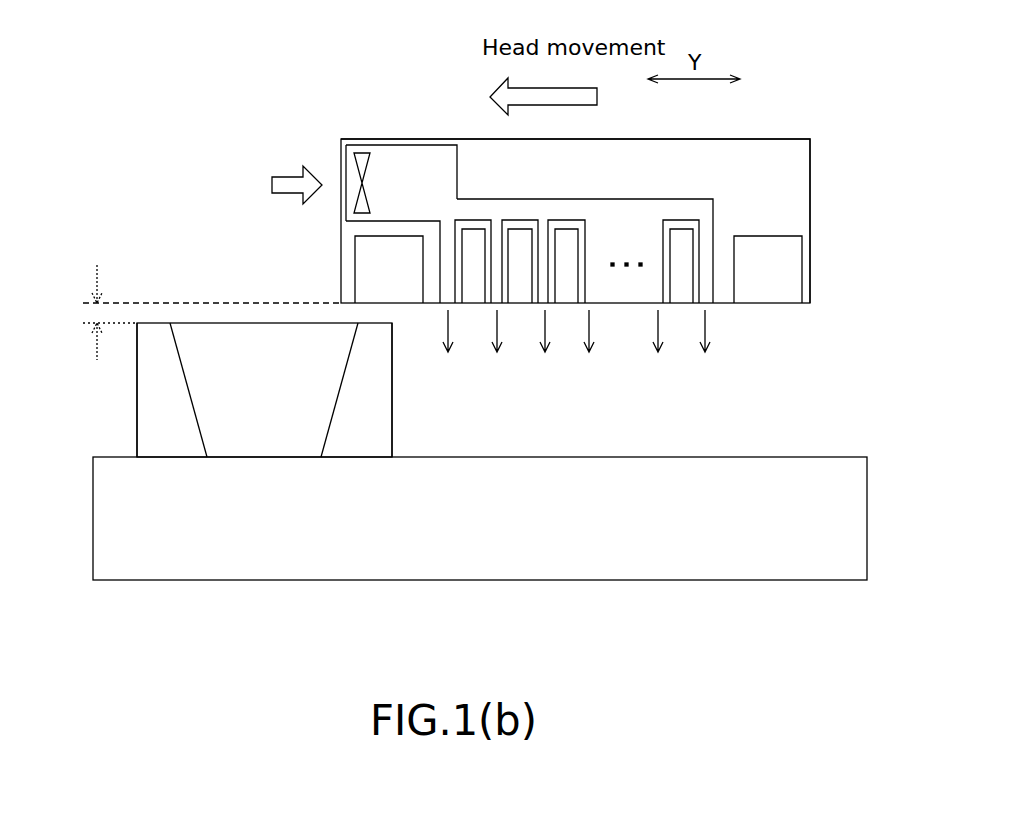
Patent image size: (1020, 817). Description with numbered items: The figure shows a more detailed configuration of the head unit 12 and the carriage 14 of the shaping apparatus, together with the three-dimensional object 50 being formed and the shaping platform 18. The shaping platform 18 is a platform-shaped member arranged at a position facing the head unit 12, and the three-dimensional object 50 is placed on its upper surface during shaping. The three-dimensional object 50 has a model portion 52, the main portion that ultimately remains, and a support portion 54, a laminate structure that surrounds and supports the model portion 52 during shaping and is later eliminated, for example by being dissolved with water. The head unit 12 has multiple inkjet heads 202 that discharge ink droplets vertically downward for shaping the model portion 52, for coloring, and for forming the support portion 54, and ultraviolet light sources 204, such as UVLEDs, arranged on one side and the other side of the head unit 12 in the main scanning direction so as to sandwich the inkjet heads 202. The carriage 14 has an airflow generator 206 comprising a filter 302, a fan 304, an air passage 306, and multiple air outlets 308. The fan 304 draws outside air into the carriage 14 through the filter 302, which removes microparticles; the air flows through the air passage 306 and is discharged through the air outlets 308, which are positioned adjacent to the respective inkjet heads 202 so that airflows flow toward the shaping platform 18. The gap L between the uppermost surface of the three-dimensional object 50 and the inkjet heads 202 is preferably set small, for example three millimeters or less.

The head unit 12 is at (814, 285).
The carriage 14 is at (798, 162).
The shaping platform 18 is at (522, 565).
The three-dimensional object 50 is at (127, 403).
The model portion 52 is at (256, 447).
The support portion 54 is at (165, 447).
The inkjet heads 202 is at (523, 237).
The ultraviolet light sources 204 is at (368, 272).
The airflow generator 206 is at (412, 160).
The filter 302 is at (341, 165).
The fan 304 is at (367, 160).
The air passage 306 is at (445, 203).
The air outlets 308 is at (444, 306).
The gap L is at (95, 313).